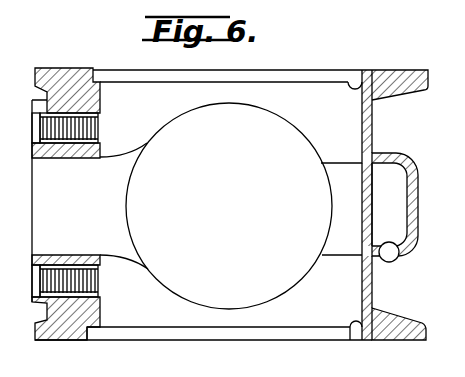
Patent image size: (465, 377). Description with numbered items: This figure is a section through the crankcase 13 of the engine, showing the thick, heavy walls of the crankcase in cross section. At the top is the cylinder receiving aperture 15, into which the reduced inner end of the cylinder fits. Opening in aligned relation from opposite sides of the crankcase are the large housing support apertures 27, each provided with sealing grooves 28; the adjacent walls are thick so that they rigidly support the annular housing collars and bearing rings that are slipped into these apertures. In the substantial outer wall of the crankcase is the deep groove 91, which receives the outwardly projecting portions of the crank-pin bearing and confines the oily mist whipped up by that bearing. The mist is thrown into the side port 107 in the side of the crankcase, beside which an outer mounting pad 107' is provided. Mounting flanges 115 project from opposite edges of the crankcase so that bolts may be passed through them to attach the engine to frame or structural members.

The crankcase 13 is at (372, 108).
The cylinder receiving aperture 15 is at (180, 118).
The housing support apertures 27 is at (350, 72).
The sealing grooves 28 is at (98, 68).
The groove 91 is at (394, 260).
The side port 107 is at (66, 265).
The outer mounting pad 107' is at (59, 331).
The mounting flanges 115 is at (406, 320).